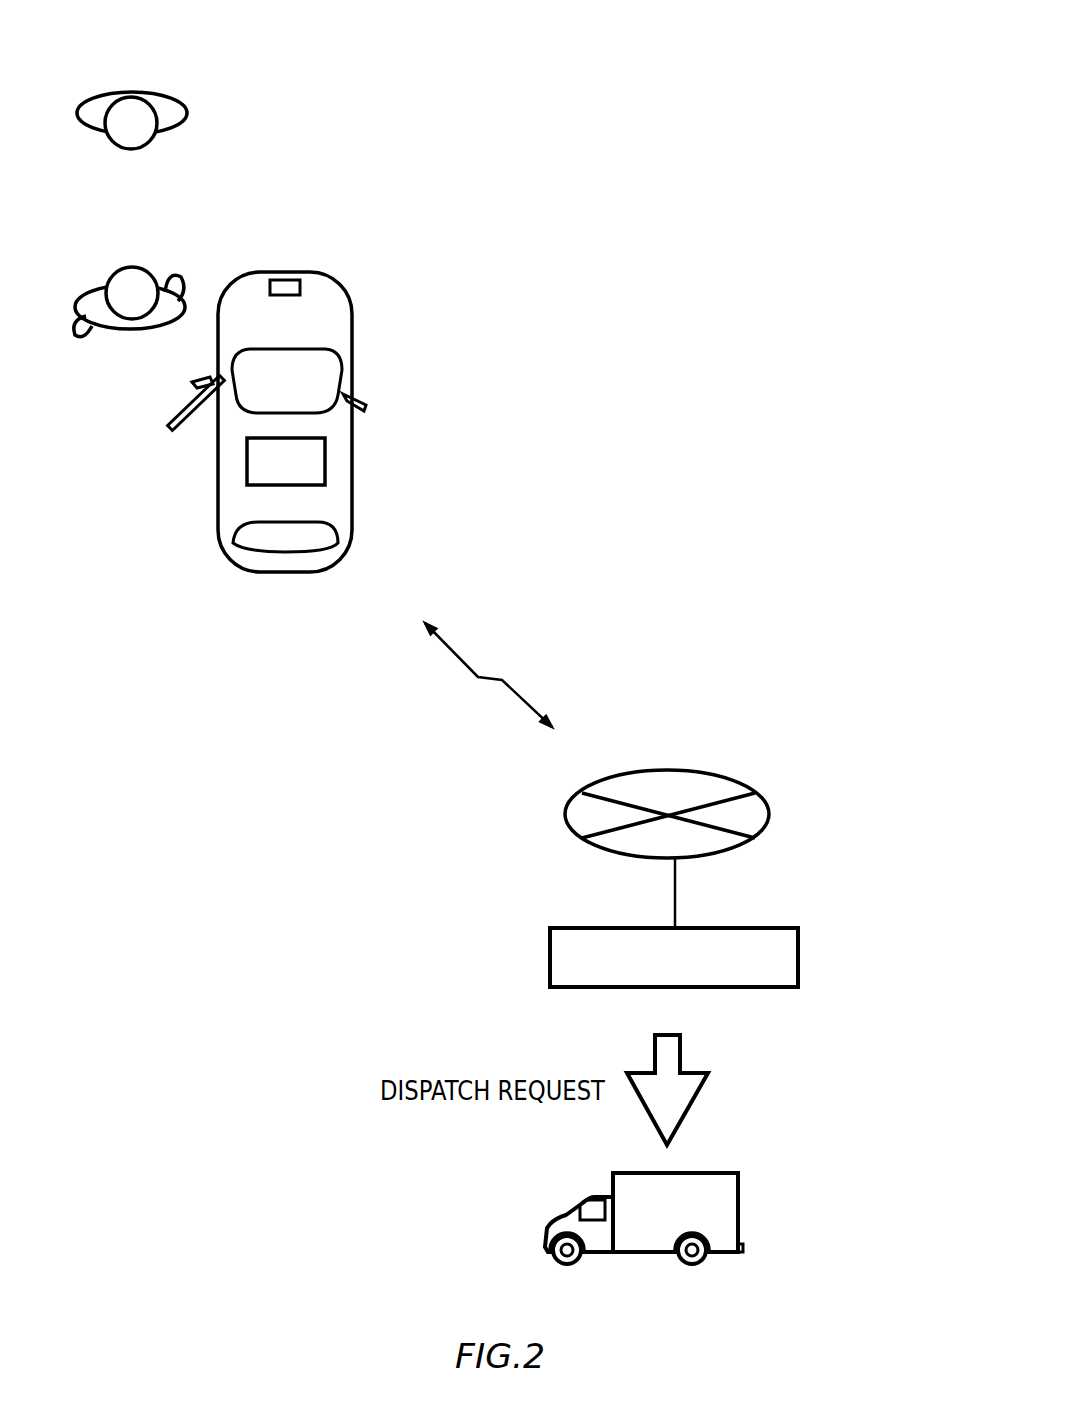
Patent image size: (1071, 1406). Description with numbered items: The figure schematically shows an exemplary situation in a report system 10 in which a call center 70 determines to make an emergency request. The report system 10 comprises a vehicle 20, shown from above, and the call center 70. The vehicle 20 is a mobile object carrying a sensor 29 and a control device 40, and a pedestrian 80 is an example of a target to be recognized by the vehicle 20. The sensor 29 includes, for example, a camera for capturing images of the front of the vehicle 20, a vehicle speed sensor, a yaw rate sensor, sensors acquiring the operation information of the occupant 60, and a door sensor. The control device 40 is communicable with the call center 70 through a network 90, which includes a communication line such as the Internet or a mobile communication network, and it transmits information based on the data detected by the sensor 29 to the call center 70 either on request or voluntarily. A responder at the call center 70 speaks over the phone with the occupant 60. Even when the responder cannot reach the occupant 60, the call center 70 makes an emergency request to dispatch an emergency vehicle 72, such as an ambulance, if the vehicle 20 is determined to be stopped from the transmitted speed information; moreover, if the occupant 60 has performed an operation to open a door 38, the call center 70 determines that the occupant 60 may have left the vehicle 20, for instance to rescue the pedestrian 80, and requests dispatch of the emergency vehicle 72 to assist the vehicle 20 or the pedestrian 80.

The report system 10 is at (715, 31).
The vehicle 20 is at (218, 518).
The sensor 29 is at (287, 280).
The door 38 is at (168, 430).
The control device 40 is at (247, 458).
The occupant 60 is at (142, 329).
The call center 70 is at (712, 928).
The emergency vehicle 72 is at (715, 1173).
The pedestrian 80 is at (112, 91).
The network 90 is at (720, 773).